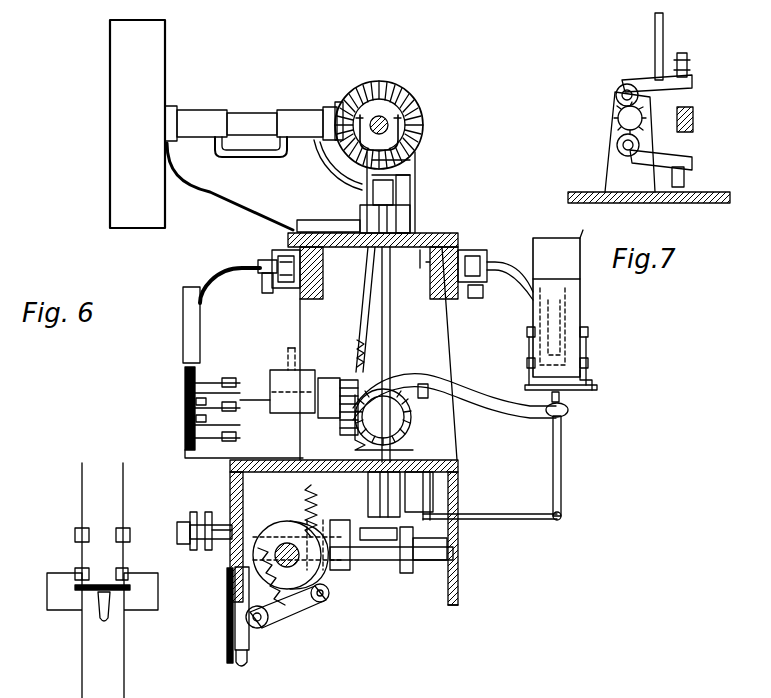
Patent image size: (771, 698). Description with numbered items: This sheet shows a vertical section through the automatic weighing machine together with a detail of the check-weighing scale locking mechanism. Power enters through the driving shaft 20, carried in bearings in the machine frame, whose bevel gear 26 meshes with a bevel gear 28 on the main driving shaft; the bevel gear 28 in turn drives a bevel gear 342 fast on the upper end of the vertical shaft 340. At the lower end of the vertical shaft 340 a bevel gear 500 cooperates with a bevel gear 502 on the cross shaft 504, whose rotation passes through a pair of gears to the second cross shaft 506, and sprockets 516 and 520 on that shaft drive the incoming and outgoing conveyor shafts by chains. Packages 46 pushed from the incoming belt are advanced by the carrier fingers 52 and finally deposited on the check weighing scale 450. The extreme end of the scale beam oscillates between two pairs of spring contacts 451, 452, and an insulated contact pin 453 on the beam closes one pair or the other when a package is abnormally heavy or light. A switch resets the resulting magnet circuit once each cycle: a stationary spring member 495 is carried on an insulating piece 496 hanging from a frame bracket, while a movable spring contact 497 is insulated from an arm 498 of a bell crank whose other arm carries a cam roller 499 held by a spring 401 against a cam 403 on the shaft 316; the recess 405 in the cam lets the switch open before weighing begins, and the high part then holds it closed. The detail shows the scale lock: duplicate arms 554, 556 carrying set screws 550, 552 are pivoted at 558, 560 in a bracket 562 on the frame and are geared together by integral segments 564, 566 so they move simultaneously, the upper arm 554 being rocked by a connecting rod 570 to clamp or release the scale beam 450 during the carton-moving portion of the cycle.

In FIG. 6, the driving shaft 20 is at (245, 118).
In FIG. 6, the bevel gear 26 is at (338, 103).
In FIG. 6, the bevel gear 28 is at (378, 82).
In FIG. 6, the bevel gear 342 is at (358, 172).
In FIG. 6, the vertical shaft 340 is at (391, 342).
In FIG. 6, the carrier fingers 52 is at (205, 290).
In FIG. 6, the packages 46 is at (588, 305).
In FIG. 6, the spring contacts 451 is at (224, 375).
In FIG. 6, the spring contacts 452 is at (190, 402).
In FIG. 6, the contact pin 453 is at (246, 405).
In FIG. 6, the bracket 562 is at (327, 376).
In FIG. 7, the bracket 562 is at (614, 143).
In FIG. 6, the check weighing scale 450 is at (478, 392).
In FIG. 7, the check weighing scale 450 is at (690, 107).
In FIG. 6, the bevel gear 500 is at (430, 527).
In FIG. 6, the cross shaft 504 is at (460, 577).
In FIG. 6, the bevel gear 502 is at (460, 600).
In FIG. 6, the recess 405 is at (390, 500).
In FIG. 6, the second cross shaft 506 is at (277, 527).
In FIG. 6, the shaft 316 is at (238, 513).
In FIG. 6, the spring 401 is at (345, 586).
In FIG. 6, the cam 403 is at (365, 546).
In FIG. 6, the sprocket 520 is at (190, 518).
In FIG. 6, the sprocket 516 is at (216, 551).
In FIG. 6, the arm 498 is at (270, 641).
In FIG. 6, the cam roller 499 is at (330, 598).
In FIG. 6, the movable spring contact 497 is at (255, 660).
In FIG. 6, the insulating piece 496 is at (227, 623).
In FIG. 6, the stationary spring member 495 is at (240, 663).
In FIG. 7, the connecting rod 570 is at (664, 30).
In FIG. 7, the upper arm 554 is at (645, 80).
In FIG. 7, the set screw 550 is at (688, 58).
In FIG. 7, the pivot 558 is at (623, 86).
In FIG. 7, the segment 564 is at (616, 108).
In FIG. 7, the segment 566 is at (618, 124).
In FIG. 7, the pivot 560 is at (617, 148).
In FIG. 7, the lower arm 556 is at (656, 158).
In FIG. 7, the set screw 552 is at (686, 182).